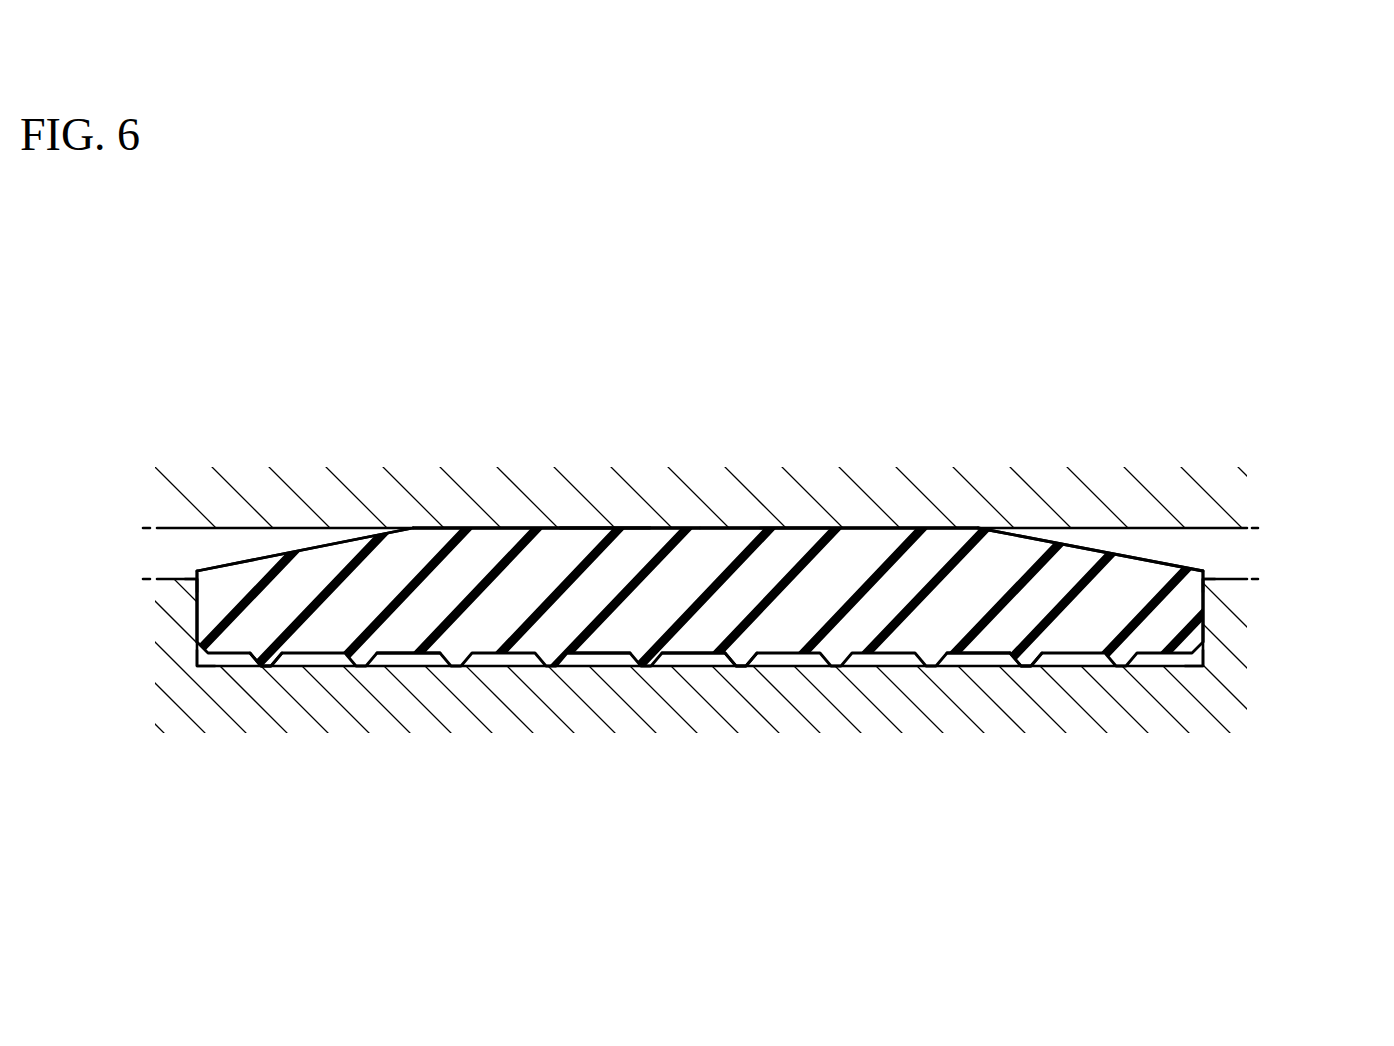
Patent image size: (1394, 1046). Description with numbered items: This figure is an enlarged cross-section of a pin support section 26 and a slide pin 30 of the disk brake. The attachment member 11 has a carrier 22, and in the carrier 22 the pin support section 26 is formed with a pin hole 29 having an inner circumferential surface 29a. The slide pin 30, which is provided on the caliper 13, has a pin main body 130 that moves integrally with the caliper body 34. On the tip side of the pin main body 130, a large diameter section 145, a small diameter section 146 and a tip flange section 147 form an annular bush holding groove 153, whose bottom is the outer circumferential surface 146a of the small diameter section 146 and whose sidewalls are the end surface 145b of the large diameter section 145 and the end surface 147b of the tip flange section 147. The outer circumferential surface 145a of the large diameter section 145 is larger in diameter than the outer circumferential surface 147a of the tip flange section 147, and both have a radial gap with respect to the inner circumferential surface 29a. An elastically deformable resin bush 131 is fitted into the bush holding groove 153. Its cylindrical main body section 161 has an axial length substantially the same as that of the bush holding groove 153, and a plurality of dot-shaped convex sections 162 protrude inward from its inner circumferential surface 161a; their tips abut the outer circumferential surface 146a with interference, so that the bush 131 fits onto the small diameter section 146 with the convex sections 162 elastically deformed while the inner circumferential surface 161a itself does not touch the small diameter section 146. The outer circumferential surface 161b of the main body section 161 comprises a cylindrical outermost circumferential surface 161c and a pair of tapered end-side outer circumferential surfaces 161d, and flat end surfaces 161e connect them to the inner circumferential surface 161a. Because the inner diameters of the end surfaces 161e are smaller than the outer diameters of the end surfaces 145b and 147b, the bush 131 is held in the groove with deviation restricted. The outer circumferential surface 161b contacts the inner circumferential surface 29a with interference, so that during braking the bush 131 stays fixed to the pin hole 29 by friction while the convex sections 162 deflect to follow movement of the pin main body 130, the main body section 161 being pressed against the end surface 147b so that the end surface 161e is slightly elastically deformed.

The attachment member 11 is at (716, 461).
The carrier 22 is at (716, 461).
The caliper body 34 is at (262, 497).
The pin support section 26 is at (1157, 497).
The pin hole 29 is at (1207, 530).
The inner circumferential surface of pin hole 29a is at (192, 530).
The bush 131 is at (795, 528).
The caliper 13 is at (692, 613).
The slide pin 30 is at (692, 613).
The pin main body 130 is at (525, 715).
The tip flange section 147 is at (172, 580).
The large diameter section 145 is at (1215, 580).
The outer circumferential surface of tip flange section 147a is at (188, 580).
The end surface of tip flange section 147b is at (200, 630).
The outer circumferential surface of large diameter section 145a is at (1205, 578).
The end surface of large diameter section 145b is at (1200, 630).
The main body section 161 is at (493, 565).
The inner circumferential surface 161a is at (698, 655).
The outer circumferential surface 161b is at (840, 528).
The outermost circumferential surface 161c is at (603, 528).
The end-side outer circumferential surface 161d is at (290, 552).
The end surface 161e is at (195, 602).
The convex section 162 is at (262, 657).
The bush holding groove 153 is at (425, 652).
The small diameter section 146 is at (982, 655).
The outer circumferential surface of small diameter section 146a is at (610, 655).